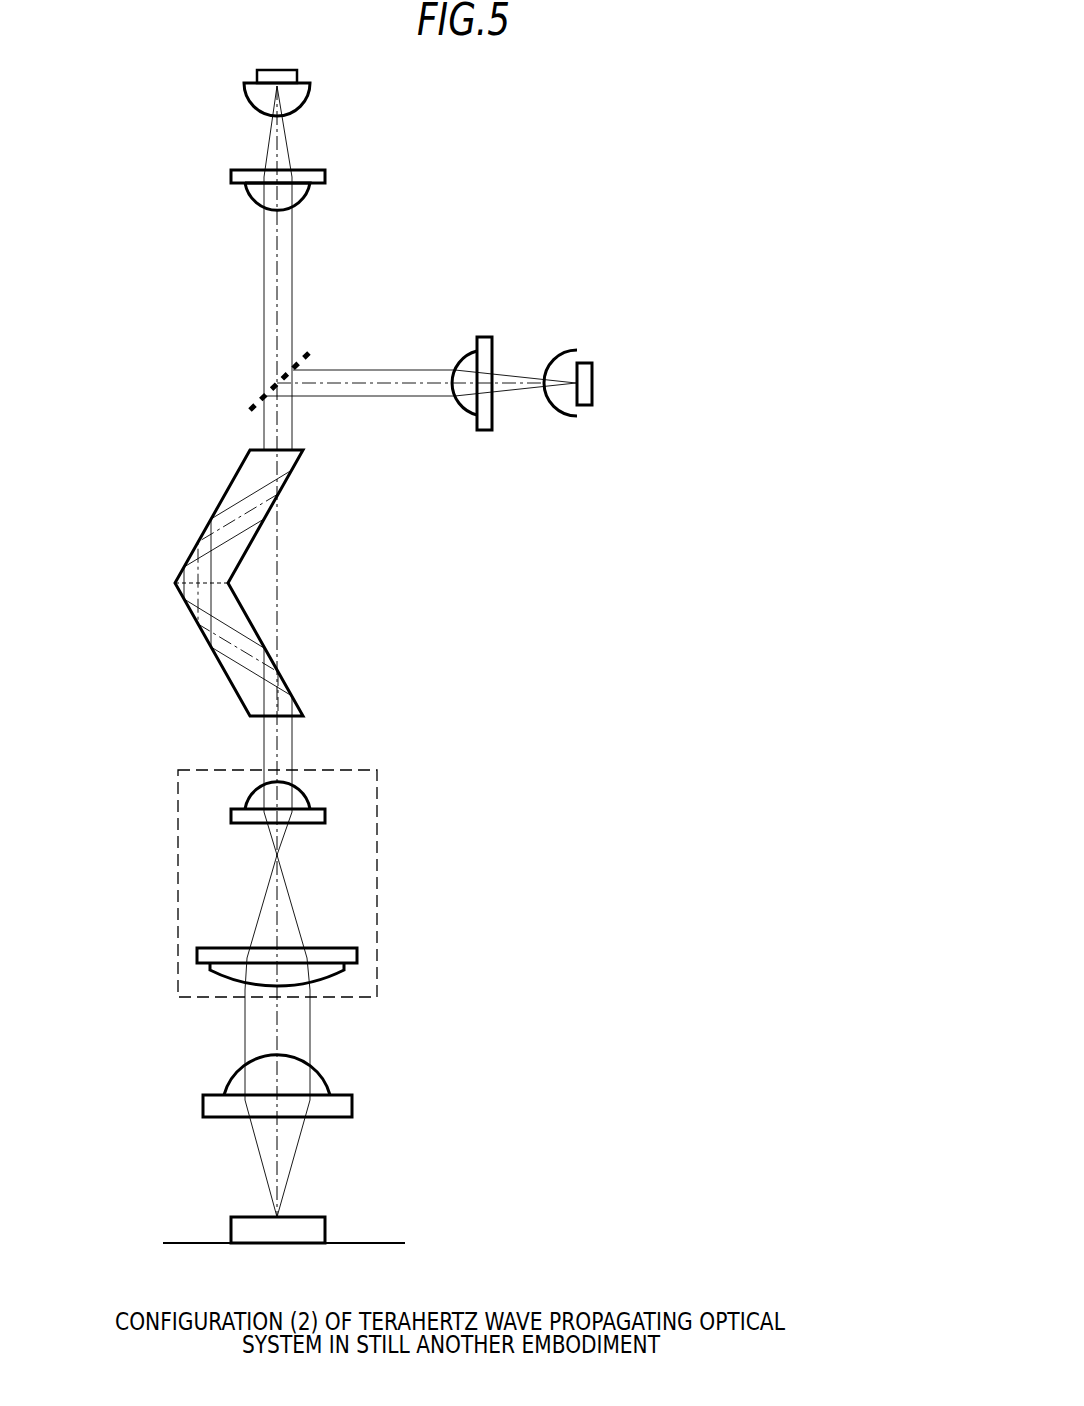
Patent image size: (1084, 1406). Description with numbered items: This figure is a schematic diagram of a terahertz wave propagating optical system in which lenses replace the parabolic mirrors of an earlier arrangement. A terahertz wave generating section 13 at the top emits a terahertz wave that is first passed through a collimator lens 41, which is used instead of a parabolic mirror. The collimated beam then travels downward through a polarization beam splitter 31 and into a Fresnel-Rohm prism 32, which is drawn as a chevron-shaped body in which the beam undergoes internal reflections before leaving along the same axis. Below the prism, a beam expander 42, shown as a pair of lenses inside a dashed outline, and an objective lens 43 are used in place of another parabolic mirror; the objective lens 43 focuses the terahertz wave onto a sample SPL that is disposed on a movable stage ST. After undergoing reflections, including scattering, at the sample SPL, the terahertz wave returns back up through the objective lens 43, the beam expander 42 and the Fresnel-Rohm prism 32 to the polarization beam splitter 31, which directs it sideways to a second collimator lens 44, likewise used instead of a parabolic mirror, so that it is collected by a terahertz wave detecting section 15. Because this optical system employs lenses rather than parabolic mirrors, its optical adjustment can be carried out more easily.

The terahertz wave generating section 13 is at (300, 76).
The collimator lens 41 is at (325, 177).
The polarization beam splitter 31 is at (313, 348).
The collimator lens 44 is at (485, 430).
The terahertz wave detecting section 15 is at (592, 380).
The Fresnel-Rohm prism 32 is at (253, 545).
The beam expander 42 is at (377, 877).
The objective lens 43 is at (352, 1105).
The sample SPL is at (325, 1222).
The movable stage ST is at (363, 1243).